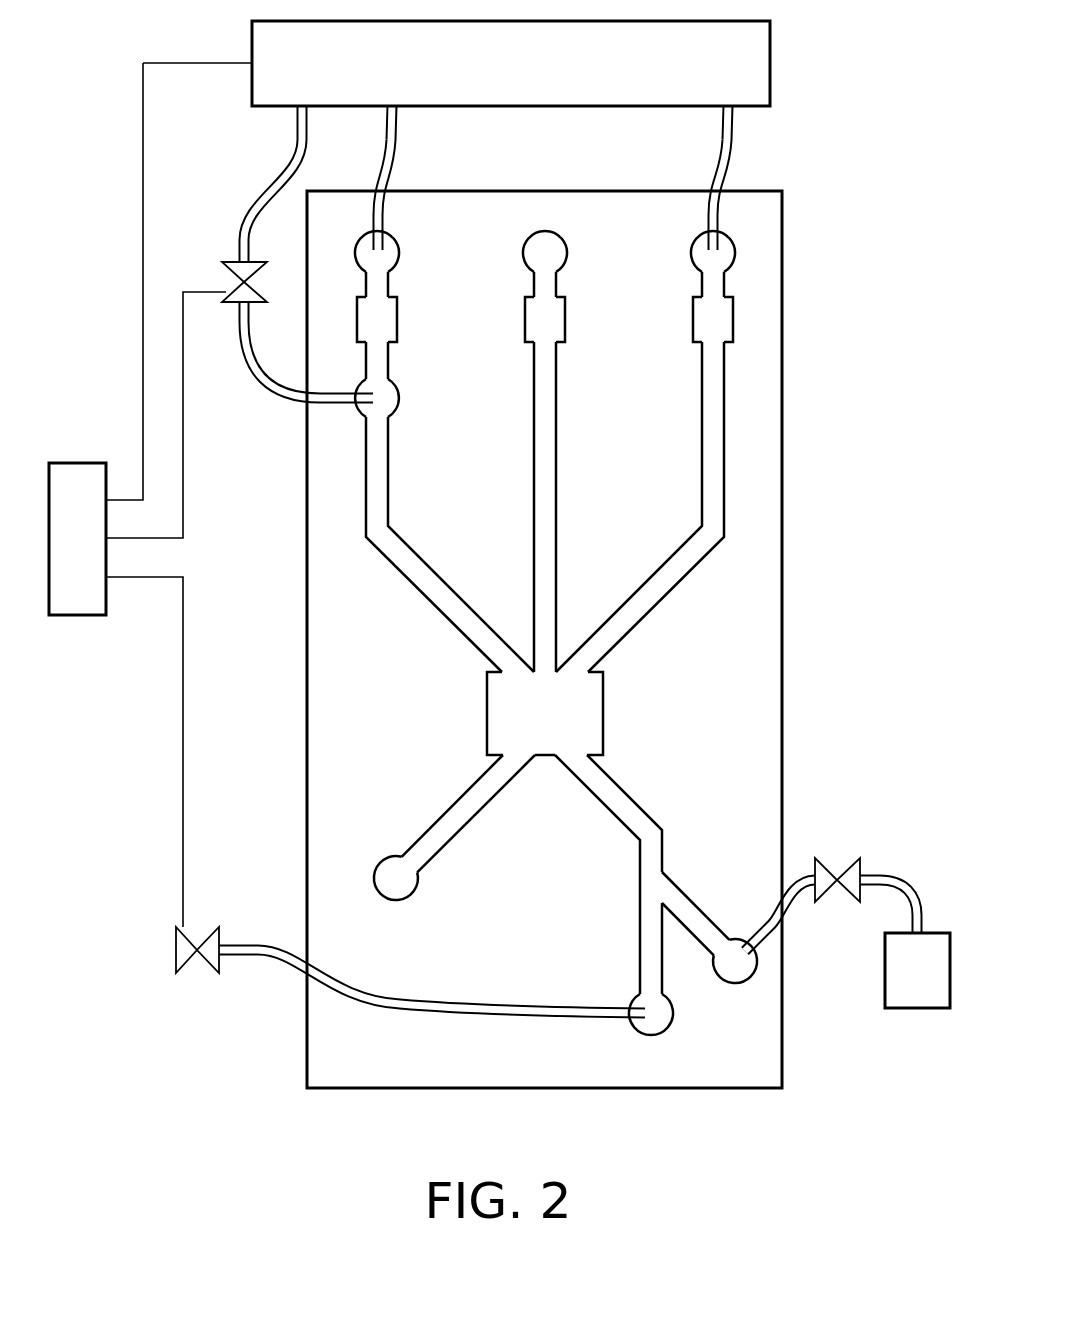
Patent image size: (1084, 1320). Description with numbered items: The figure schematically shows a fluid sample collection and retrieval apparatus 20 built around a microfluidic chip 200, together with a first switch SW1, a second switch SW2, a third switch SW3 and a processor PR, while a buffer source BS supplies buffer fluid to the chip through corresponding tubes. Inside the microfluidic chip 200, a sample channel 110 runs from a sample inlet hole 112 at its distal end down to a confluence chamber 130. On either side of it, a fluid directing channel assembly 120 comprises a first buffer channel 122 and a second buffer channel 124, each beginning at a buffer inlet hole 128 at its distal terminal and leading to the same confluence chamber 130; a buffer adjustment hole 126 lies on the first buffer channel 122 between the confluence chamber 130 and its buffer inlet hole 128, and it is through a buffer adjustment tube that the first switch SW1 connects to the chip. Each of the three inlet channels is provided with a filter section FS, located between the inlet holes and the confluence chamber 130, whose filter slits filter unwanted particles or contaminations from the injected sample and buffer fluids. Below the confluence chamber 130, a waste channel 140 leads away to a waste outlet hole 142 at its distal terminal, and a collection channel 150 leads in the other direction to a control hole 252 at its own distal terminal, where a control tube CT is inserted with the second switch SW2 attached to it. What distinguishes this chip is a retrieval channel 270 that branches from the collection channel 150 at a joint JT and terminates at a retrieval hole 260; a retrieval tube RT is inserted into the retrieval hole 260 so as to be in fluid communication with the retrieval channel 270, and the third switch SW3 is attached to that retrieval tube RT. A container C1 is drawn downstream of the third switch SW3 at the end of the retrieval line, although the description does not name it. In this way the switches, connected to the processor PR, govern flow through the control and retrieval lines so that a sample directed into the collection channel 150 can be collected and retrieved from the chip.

The fluid sample collection and retrieval apparatus 20 is at (912, 1139).
The sample channel 110 is at (688, 401).
The sample inlet hole 112 is at (545, 233).
The fluid directing channel assembly 120 is at (625, 472).
The first buffer channel 122 is at (383, 505).
The second buffer channel 124 is at (713, 427).
The buffer adjustment hole 126 is at (405, 399).
The buffer inlet hole 128 is at (356, 243).
The confluence chamber 130 is at (603, 712).
The waste channel 140 is at (541, 815).
The waste outlet hole 142 is at (380, 863).
The collection channel 150 is at (699, 942).
The microfluidic chip 200 is at (783, 528).
The control hole 252 is at (652, 1038).
The retrieval hole 260 is at (736, 990).
The retrieval channel 270 is at (752, 971).
The buffer source BS is at (772, 62).
The processor PR is at (77, 615).
The collector C1 is at (917, 1008).
The control tube CT is at (408, 1004).
The joint JT is at (664, 910).
The retrieval tube RT is at (763, 950).
The filter section FS is at (400, 318).
The first switch SW1 is at (226, 268).
The second switch SW2 is at (207, 973).
The third switch SW3 is at (838, 902).